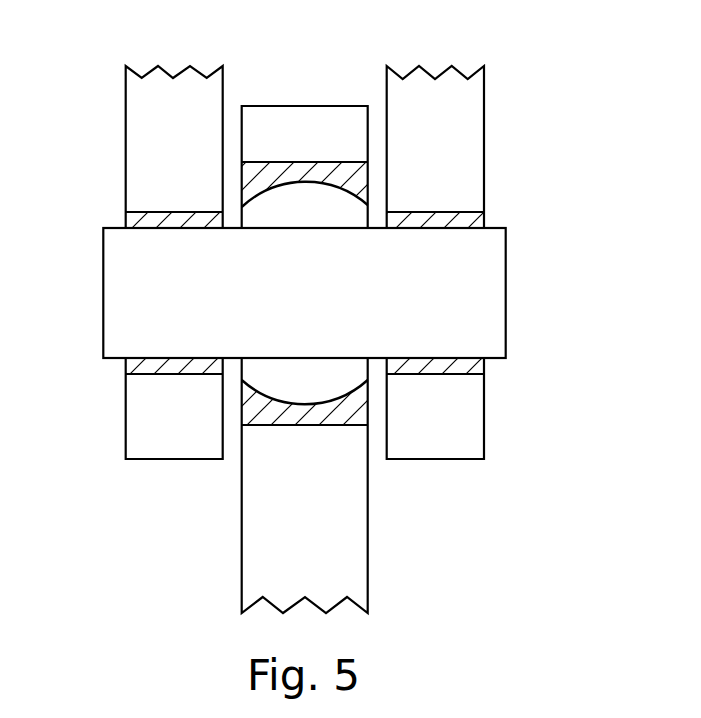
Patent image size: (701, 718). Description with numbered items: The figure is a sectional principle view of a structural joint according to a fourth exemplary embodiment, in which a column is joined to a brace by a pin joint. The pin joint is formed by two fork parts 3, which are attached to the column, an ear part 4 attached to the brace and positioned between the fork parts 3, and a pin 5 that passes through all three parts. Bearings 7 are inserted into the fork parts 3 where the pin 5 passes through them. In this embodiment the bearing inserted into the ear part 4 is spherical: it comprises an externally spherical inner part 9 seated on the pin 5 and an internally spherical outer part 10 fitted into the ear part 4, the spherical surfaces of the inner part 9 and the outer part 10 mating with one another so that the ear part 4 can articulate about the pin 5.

The fork parts 3 is at (148, 92).
The ear part 4 is at (302, 122).
The pin 5 is at (483, 293).
The bearings 7 is at (468, 222).
The externally spherical inner part 9 is at (311, 387).
The internally spherical outer part 10 is at (279, 409).